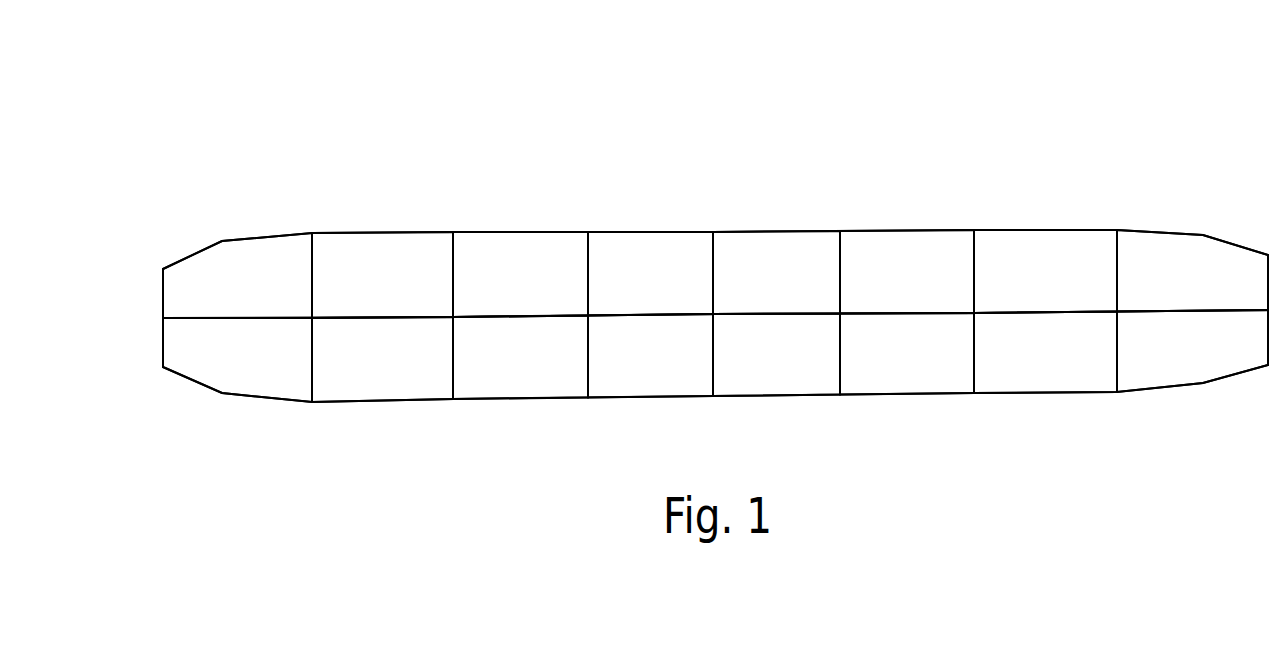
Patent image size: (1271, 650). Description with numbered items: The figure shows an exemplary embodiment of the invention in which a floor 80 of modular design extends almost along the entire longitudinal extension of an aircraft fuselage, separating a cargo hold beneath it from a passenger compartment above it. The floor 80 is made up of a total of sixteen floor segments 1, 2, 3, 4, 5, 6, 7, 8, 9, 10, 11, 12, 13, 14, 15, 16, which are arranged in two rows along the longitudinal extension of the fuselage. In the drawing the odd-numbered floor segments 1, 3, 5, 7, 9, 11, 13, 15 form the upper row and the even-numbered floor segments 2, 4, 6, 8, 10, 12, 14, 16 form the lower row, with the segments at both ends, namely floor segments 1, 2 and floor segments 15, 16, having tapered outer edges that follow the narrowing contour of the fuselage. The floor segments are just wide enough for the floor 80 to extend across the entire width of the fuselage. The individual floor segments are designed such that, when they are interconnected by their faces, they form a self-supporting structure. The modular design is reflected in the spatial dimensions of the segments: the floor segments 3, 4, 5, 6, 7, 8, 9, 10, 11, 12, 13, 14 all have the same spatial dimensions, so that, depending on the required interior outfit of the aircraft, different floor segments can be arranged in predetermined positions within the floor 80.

The floor 80 is at (1032, 141).
The floor segment 1 is at (237, 275).
The floor segment 2 is at (237, 360).
The floor segment 3 is at (382, 275).
The floor segment 4 is at (382, 359).
The floor segment 5 is at (520, 274).
The floor segment 6 is at (520, 358).
The floor segment 7 is at (650, 274).
The floor segment 8 is at (650, 356).
The floor segment 9 is at (776, 272).
The floor segment 10 is at (776, 355).
The floor segment 11 is at (907, 272).
The floor segment 12 is at (907, 354).
The floor segment 13 is at (1045, 271).
The floor segment 14 is at (1045, 353).
The floor segment 15 is at (1192, 271).
The floor segment 16 is at (1192, 351).